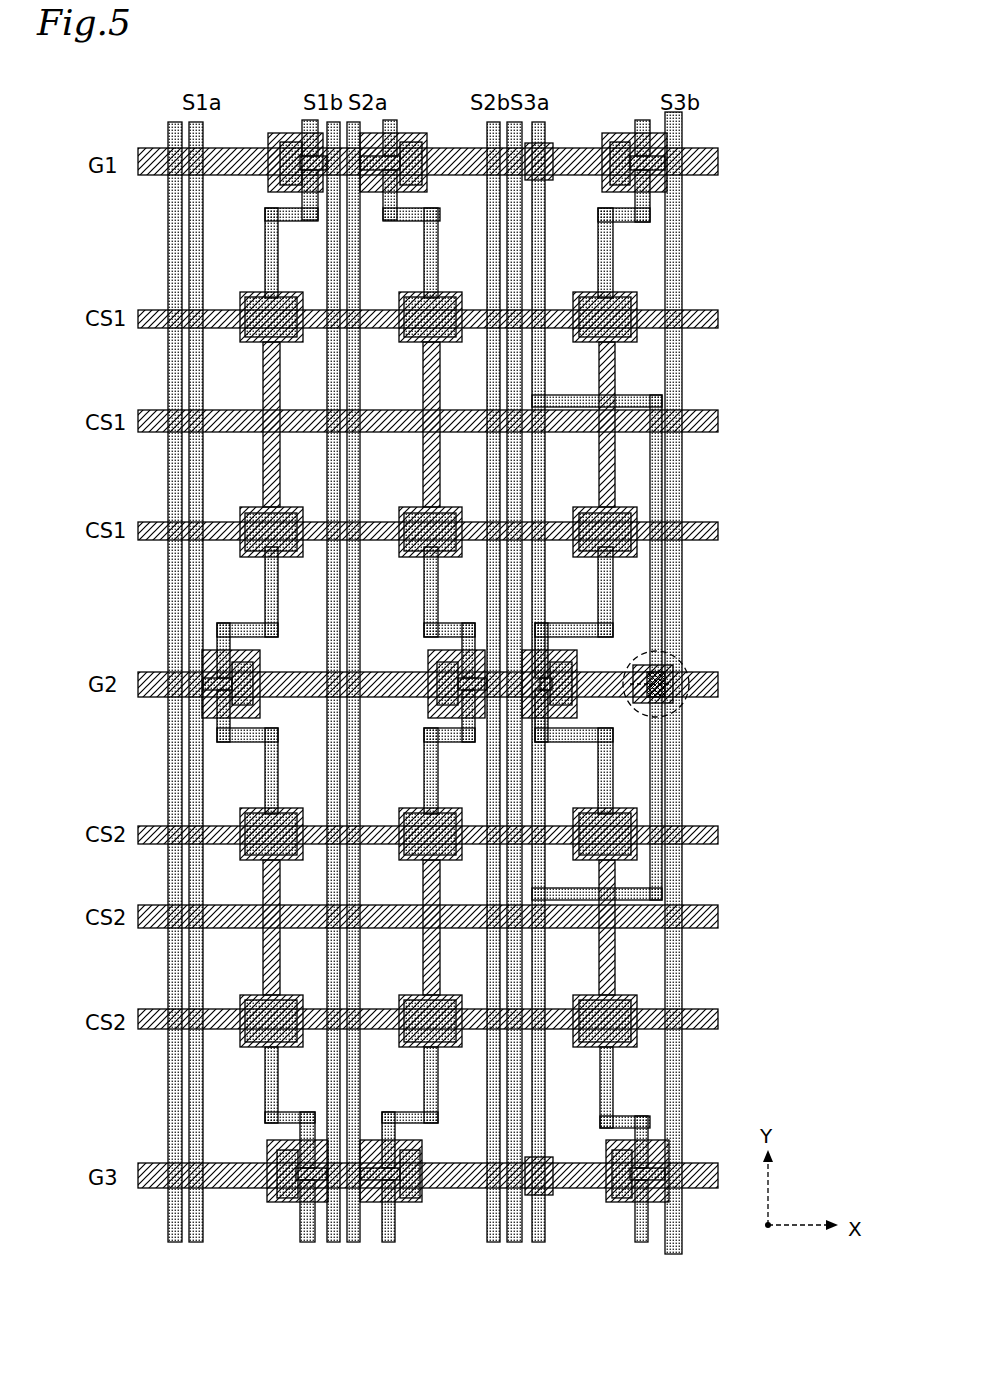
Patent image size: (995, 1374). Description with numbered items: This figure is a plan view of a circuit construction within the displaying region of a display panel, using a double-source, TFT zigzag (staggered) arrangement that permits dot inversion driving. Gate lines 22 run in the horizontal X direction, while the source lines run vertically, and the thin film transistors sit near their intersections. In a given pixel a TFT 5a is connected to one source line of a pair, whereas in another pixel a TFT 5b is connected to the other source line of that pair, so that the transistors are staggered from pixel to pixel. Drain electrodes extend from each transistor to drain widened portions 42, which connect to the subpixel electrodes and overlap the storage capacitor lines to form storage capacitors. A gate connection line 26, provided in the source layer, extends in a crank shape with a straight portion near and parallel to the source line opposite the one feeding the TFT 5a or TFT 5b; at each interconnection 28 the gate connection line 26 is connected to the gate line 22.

The TFT 5a is at (590, 712).
The TFT 5b is at (653, 202).
The gate line 22 is at (460, 657).
The gate connection line 26 is at (658, 473).
The interconnection 28 is at (673, 662).
The drain widened portion 42 is at (458, 508).